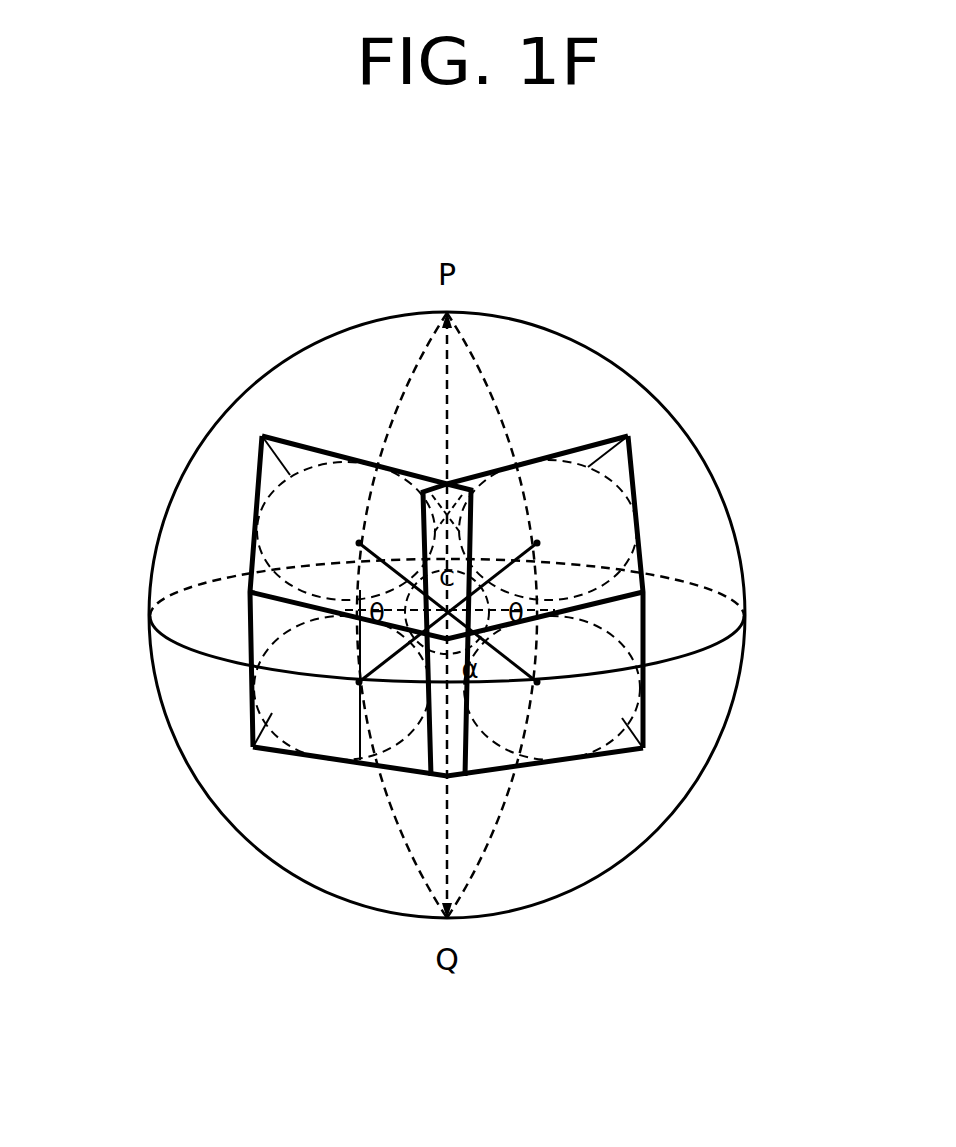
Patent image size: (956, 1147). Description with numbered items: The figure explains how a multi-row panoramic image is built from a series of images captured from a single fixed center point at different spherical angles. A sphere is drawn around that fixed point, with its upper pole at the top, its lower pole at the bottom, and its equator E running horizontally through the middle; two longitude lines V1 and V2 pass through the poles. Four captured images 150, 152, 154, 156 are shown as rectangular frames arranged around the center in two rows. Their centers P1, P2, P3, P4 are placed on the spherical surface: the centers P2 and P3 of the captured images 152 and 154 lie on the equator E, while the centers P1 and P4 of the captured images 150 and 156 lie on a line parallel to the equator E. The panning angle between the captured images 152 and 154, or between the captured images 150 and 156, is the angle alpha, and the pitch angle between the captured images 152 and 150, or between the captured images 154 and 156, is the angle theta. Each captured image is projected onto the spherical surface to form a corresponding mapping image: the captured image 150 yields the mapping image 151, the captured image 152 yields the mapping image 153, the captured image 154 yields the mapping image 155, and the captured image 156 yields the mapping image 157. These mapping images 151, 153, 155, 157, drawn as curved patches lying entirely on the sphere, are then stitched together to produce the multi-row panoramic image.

The captured image 150 is at (637, 457).
The mapping image 151 is at (631, 433).
The captured image 152 is at (603, 753).
The mapping image 153 is at (643, 748).
The captured image 154 is at (268, 747).
The mapping image 155 is at (268, 716).
The captured image 156 is at (260, 472).
The mapping image 157 is at (260, 433).
The equator E is at (692, 657).
The longitude line V1 is at (411, 376).
The longitude line V2 is at (493, 388).
The center of captured image P1 is at (560, 526).
The center of captured image P2 is at (560, 699).
The center of captured image P3 is at (338, 699).
The center of captured image P4 is at (335, 526).